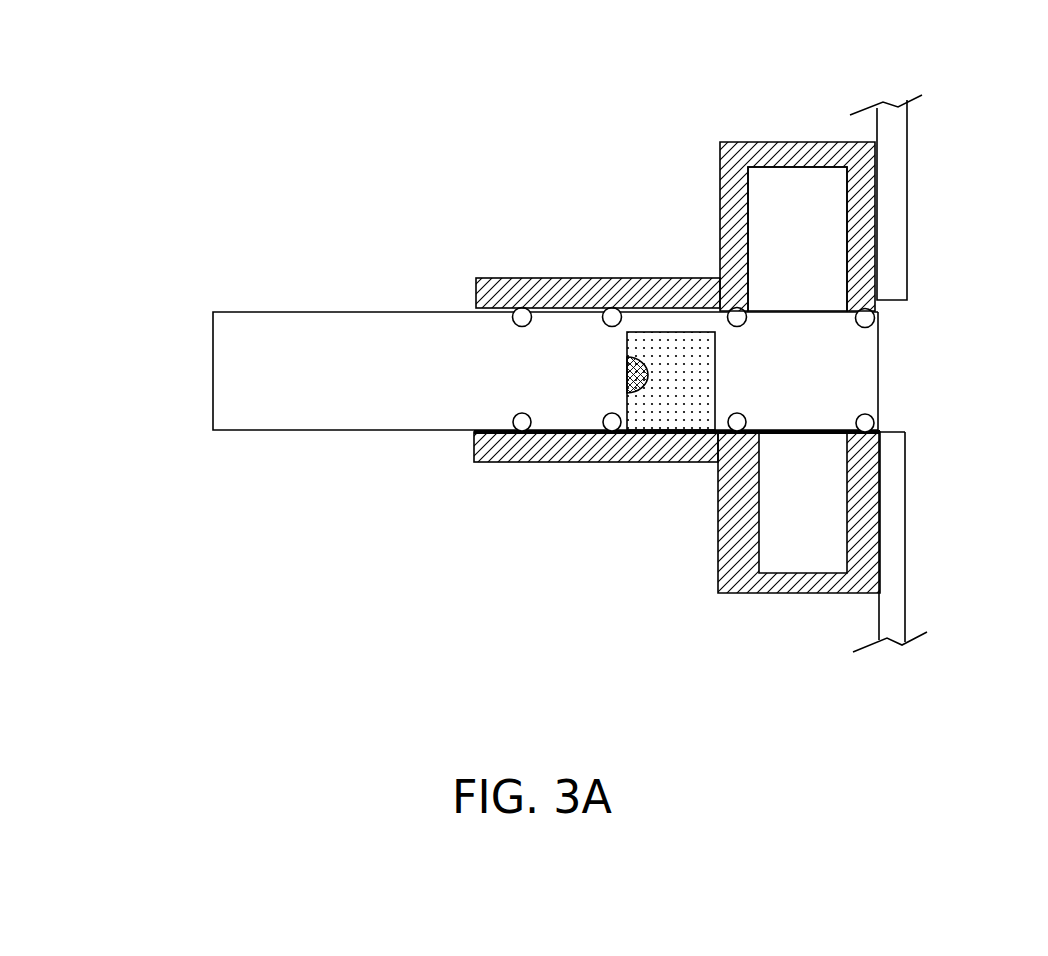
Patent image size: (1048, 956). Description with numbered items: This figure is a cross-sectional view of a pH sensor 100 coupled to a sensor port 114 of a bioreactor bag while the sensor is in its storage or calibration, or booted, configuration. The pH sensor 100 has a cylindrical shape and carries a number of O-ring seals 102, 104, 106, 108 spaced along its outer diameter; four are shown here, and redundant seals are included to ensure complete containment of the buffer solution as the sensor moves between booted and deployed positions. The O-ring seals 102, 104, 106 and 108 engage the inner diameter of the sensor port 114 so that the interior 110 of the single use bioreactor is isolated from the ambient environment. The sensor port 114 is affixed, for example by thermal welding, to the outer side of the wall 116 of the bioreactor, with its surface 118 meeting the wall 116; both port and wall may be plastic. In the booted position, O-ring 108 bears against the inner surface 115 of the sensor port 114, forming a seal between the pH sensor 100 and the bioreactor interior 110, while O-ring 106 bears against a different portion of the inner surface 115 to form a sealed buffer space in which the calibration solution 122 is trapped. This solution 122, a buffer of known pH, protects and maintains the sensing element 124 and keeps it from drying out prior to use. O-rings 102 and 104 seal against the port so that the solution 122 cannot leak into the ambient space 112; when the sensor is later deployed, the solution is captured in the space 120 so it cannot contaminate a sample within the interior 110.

The pH sensor 100 is at (378, 299).
The O-ring seal 102 is at (502, 393).
The O-ring seal 104 is at (599, 394).
The O-ring seal 106 is at (724, 394).
The O-ring seal 108 is at (839, 336).
The bioreactor interior 110 is at (996, 179).
The ambient space 112 is at (201, 522).
The sensor port 114 is at (735, 142).
The inner surface of sensor port 115 is at (882, 322).
The wall 116 is at (908, 167).
The surface of sensor port 118 is at (720, 222).
The space 120 is at (803, 180).
The calibration solution 122 is at (685, 409).
The sensing element 124 is at (637, 393).